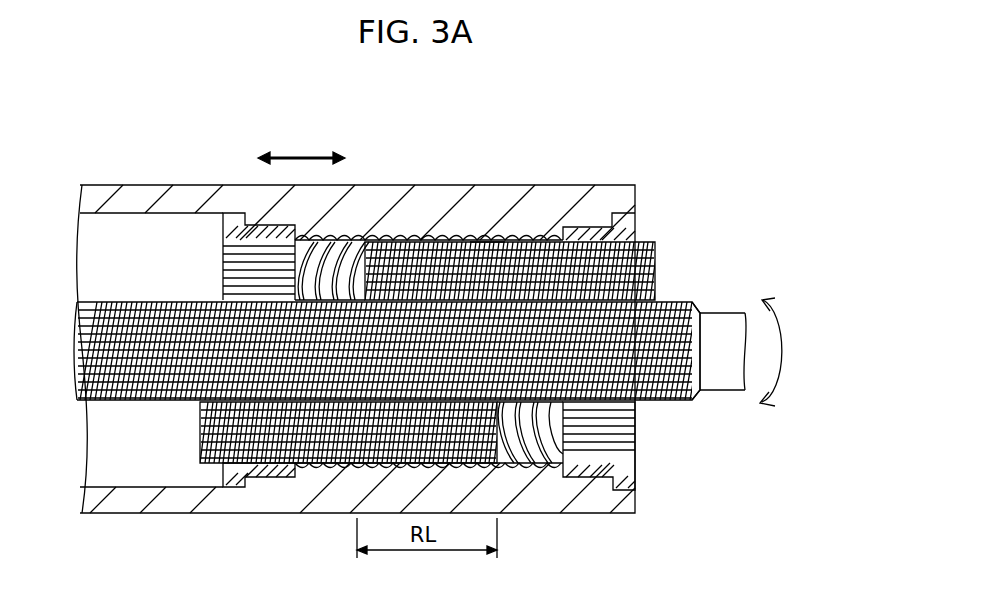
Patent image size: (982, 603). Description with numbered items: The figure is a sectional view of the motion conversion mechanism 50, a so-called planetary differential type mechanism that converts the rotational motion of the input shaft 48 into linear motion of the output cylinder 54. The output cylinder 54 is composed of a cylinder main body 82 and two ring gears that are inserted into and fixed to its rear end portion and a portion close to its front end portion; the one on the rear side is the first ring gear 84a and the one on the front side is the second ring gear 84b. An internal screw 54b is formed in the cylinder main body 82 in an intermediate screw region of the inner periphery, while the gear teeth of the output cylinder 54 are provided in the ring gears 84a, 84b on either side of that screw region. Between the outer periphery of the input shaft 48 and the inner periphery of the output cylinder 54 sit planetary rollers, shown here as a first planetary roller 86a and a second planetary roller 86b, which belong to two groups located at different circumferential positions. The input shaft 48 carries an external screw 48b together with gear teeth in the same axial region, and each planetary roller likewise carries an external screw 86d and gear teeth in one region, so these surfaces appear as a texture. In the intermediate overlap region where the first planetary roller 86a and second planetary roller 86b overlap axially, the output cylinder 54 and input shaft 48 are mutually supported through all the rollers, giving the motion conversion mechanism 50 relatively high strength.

The motion conversion mechanism 50 is at (681, 181).
The cylinder main body 82 is at (520, 195).
The first ring gear 84a is at (597, 215).
The second ring gear 84b is at (263, 230).
The first planetary rollers 86a is at (413, 243).
The second planetary rollers 86b is at (313, 458).
The external screw 86d is at (488, 238).
The output cylinder 54 is at (448, 182).
The internal screw 54b is at (333, 242).
The input shaft 48 is at (717, 377).
The external screw 48b is at (672, 300).